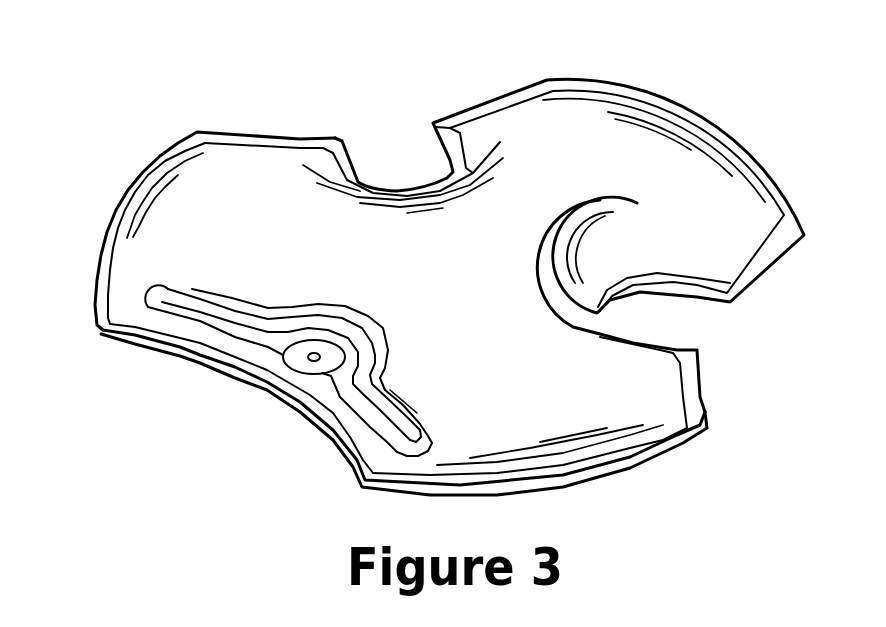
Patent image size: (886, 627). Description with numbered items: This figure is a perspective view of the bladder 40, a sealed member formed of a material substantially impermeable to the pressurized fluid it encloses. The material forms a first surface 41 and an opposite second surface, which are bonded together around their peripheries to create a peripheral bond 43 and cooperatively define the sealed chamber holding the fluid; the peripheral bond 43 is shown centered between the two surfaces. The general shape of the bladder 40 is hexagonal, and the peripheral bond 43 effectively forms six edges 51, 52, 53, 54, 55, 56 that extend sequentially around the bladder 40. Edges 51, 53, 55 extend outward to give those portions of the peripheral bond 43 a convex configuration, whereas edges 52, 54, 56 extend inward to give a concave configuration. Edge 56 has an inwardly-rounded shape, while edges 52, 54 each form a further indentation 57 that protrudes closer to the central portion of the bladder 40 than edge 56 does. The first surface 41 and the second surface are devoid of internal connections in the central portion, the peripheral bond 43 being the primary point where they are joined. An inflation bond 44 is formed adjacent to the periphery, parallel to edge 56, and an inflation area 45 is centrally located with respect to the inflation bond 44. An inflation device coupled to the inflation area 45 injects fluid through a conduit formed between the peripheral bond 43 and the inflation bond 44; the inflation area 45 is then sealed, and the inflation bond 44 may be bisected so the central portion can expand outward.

The bladder 40 is at (156, 97).
The first surface 41 is at (475, 277).
The peripheral bond 43 is at (550, 81).
The inflation bond 44 is at (212, 327).
The inflation area 45 is at (313, 361).
The edge 51 is at (560, 482).
The edge 52 is at (767, 258).
The edge 53 is at (786, 195).
The edge 54 is at (273, 137).
The edge 55 is at (107, 218).
The edge 56 is at (260, 387).
The indentation 57 is at (353, 157).